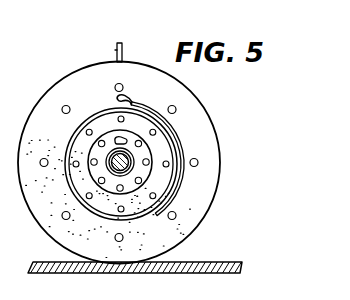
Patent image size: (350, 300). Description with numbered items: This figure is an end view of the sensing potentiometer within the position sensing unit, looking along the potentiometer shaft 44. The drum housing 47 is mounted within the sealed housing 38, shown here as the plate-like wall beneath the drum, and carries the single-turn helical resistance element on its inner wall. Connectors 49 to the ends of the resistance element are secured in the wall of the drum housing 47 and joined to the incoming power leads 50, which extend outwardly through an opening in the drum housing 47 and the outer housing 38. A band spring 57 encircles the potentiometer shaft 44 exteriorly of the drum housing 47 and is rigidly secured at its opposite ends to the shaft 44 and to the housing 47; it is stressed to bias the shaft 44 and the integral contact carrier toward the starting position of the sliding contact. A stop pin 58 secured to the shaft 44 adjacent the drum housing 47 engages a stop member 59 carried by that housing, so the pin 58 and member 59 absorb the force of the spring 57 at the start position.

The sealed housing 38 is at (212, 262).
The potentiometer shaft 44 is at (111, 167).
The drum housing 47 is at (53, 237).
The connectors 49 is at (123, 53).
The incoming power leads 50 is at (115, 50).
The band spring 57 is at (170, 192).
The stop pin 58 is at (115, 141).
The stop member 59 is at (104, 158).